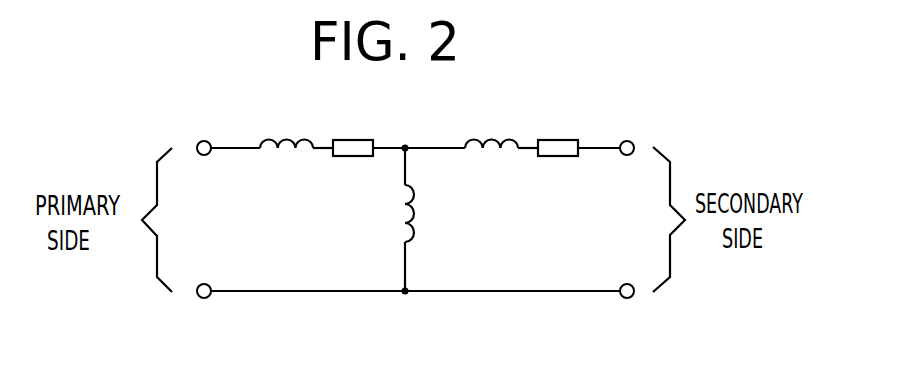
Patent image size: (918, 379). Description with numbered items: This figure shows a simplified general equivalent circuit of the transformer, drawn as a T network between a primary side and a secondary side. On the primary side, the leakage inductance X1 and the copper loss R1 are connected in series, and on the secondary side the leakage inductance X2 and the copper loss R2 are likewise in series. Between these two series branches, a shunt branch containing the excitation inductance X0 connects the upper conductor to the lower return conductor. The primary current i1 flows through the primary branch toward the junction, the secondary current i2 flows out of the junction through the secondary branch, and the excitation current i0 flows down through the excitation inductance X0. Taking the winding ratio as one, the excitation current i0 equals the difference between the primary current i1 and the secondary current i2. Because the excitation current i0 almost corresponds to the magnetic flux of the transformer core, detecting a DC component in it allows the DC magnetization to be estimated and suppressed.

The leakage inductance X1 is at (286, 167).
The copper loss R1 is at (353, 166).
The leakage inductance X2 is at (491, 167).
The copper loss R2 is at (558, 166).
The excitation inductance X0 is at (430, 214).
The primary current i1 is at (322, 120).
The secondary current i2 is at (549, 119).
The excitation current i0 is at (376, 200).